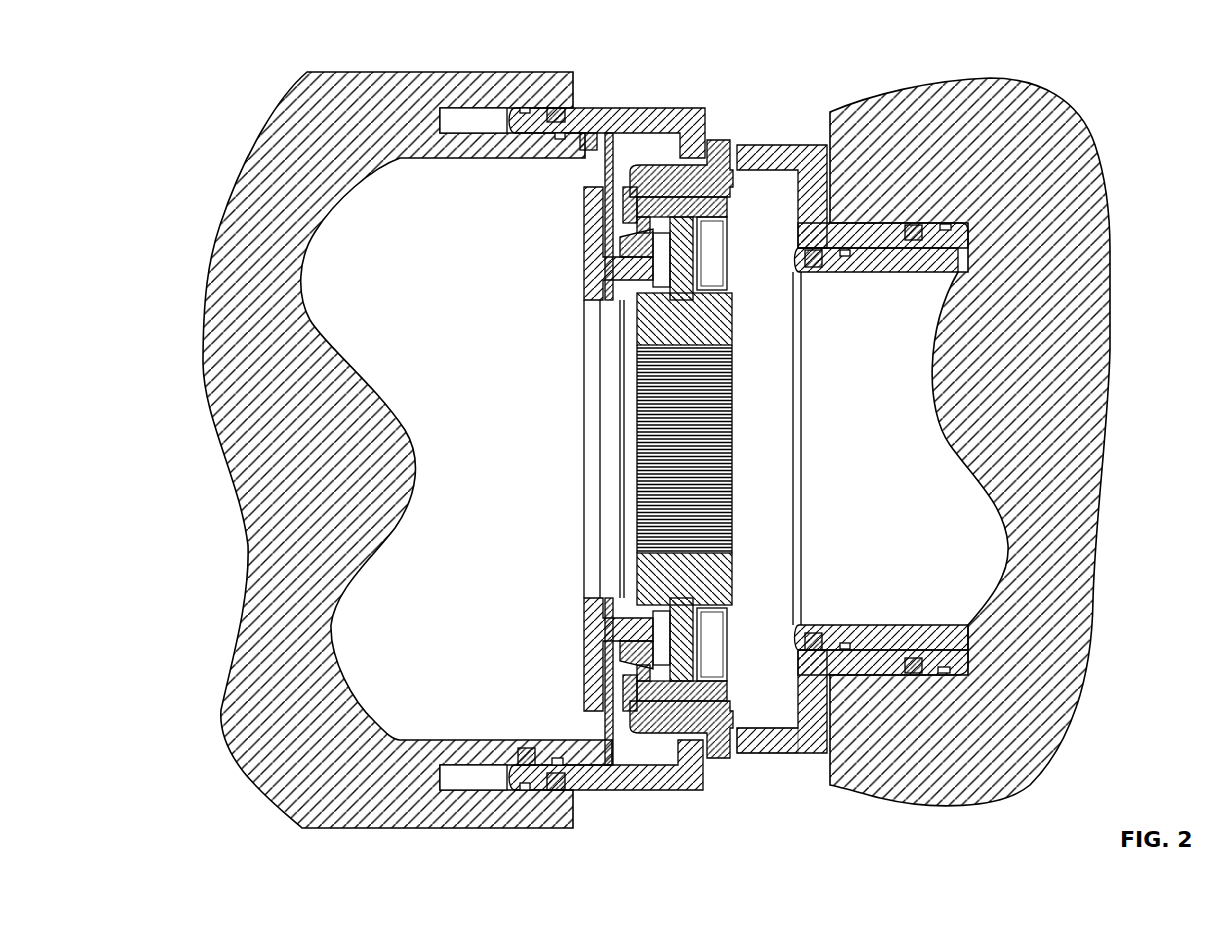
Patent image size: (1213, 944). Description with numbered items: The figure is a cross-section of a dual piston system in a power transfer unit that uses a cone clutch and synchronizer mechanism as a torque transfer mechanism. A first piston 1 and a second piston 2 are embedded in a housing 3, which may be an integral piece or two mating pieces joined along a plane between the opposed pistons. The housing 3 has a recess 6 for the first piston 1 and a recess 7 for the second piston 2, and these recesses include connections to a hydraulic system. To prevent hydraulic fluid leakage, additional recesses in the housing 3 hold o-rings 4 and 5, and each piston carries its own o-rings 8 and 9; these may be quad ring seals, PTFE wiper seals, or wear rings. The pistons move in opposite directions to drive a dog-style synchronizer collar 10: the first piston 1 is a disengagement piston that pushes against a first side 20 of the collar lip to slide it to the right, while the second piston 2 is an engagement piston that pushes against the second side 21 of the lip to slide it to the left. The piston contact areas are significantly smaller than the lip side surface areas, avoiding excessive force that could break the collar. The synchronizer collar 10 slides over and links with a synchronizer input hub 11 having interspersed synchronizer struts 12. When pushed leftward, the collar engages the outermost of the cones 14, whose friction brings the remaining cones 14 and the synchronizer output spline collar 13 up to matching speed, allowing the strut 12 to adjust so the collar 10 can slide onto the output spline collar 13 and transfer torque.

The first piston 1 is at (604, 108).
The second piston 2 is at (770, 145).
The housing 3 is at (352, 562).
The o-ring 4 is at (585, 150).
The o-ring 5 is at (558, 140).
The recess 6 is at (460, 118).
The recess 7 is at (966, 657).
The o-ring 8 is at (913, 658).
The o-ring 9 is at (943, 660).
The synchronizer collar 10 is at (650, 165).
The synchronizer input hub 11 is at (735, 315).
The synchronizer strut 12 is at (720, 207).
The synchronizer output spline collar 13 is at (592, 245).
The cone 14 is at (640, 648).
The first side 20 is at (707, 748).
The second side 21 is at (745, 750).